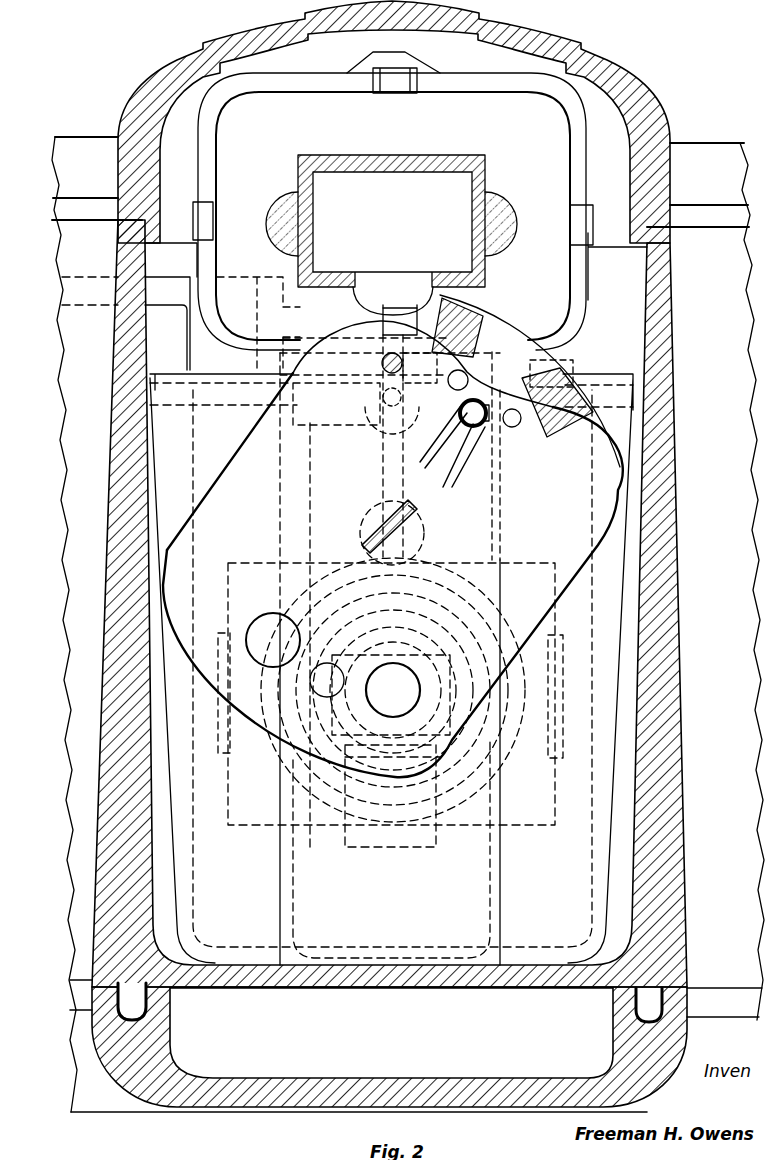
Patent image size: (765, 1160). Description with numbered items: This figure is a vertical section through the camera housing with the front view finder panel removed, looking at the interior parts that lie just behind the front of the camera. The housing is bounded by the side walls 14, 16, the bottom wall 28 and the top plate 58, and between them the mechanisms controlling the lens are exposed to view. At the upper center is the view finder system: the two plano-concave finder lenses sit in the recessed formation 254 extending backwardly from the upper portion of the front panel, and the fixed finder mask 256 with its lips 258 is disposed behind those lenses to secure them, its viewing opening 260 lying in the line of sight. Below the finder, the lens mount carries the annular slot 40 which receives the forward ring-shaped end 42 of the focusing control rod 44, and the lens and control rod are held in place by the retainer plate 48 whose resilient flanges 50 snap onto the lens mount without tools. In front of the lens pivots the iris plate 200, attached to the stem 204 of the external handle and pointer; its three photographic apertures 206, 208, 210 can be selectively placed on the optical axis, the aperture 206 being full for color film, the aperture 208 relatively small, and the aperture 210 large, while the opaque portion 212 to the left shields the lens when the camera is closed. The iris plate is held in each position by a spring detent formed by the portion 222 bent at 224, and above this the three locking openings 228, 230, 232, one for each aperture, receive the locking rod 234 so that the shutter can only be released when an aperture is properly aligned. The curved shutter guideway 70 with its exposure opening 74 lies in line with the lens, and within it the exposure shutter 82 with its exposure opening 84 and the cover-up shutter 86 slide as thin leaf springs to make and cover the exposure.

The side wall 14 is at (677, 824).
The side wall 16 is at (128, 743).
The bottom wall 28 is at (681, 1039).
The annular slot 40 is at (370, 562).
The forward ring-shaped end 42 is at (449, 840).
The focusing control rod 44 is at (393, 462).
The retainer plate 48 is at (517, 578).
The resilient flanges 50 is at (220, 722).
The top plate 58 is at (655, 106).
The shutter guideway 70 is at (500, 926).
The exposure opening 74 is at (433, 672).
The exposure shutter 82 is at (306, 952).
The exposure opening 84 is at (363, 838).
The cover-up shutter 86 is at (468, 754).
The iris plate 200 is at (563, 572).
The stem 204 is at (415, 510).
The photographic aperture 206 is at (392, 700).
The photographic aperture 208 is at (338, 668).
The photographic aperture 210 is at (290, 656).
The opaque portion 212 is at (210, 606).
The bent portion 222 is at (457, 473).
The bend 224 is at (446, 468).
The locking opening 228 is at (386, 358).
The locking opening 230 is at (456, 388).
The locking opening 232 is at (516, 424).
The locking rod 234 is at (384, 372).
The recessed formation 254 is at (582, 163).
The fixed finder mask 256 is at (545, 124).
The lips 258 is at (590, 230).
The viewing opening 260 is at (412, 233).